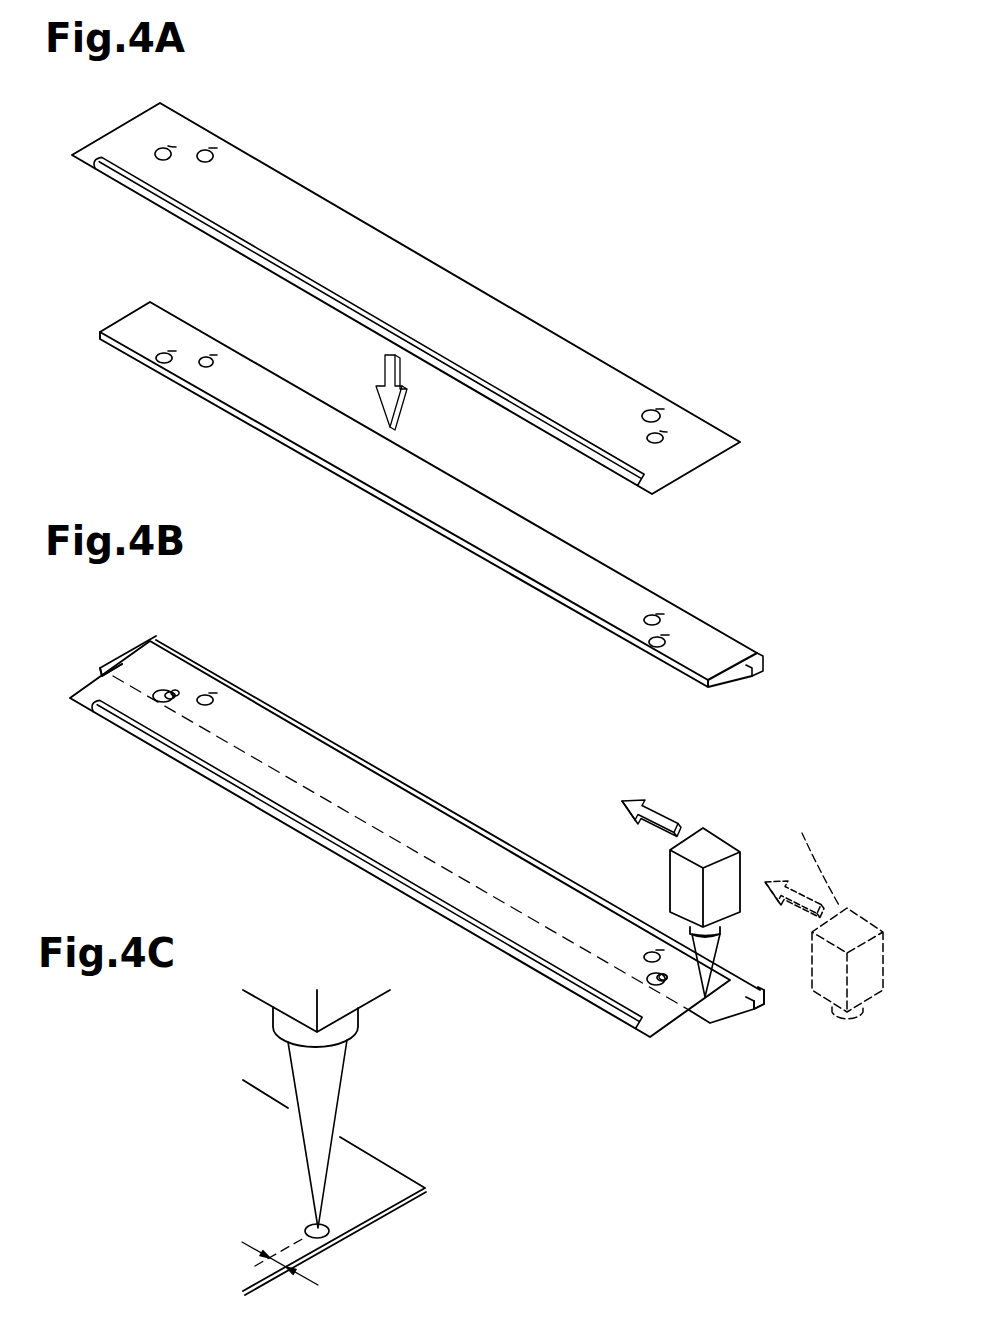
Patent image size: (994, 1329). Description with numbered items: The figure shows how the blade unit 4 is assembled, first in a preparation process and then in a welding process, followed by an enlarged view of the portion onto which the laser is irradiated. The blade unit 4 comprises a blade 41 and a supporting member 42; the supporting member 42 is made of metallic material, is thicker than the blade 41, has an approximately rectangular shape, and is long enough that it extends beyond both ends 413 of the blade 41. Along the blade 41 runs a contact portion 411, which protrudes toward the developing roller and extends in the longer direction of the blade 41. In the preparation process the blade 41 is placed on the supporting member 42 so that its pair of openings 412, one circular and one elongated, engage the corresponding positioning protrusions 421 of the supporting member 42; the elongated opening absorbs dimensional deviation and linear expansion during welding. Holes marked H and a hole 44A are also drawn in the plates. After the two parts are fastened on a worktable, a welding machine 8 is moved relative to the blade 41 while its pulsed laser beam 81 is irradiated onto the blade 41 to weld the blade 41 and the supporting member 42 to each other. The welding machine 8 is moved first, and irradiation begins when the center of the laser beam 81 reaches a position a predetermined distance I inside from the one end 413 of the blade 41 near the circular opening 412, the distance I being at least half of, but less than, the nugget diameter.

In FIG. 4B, the blade unit 4 is at (421, 835).
In FIG. 4A, the blade 41 is at (388, 240).
In FIG. 4B, the blade 41 is at (322, 752).
In FIG. 4C, the blade 41 is at (375, 1170).
In FIG. 4A, the contact portion 411 is at (358, 319).
In FIG. 4B, the contact portion 411 is at (395, 872).
In FIG. 4A, the openings 412 is at (175, 146).
In FIG. 4B, the openings 412 is at (180, 688).
In FIG. 4A, the ends of the blade 413 is at (754, 664).
In FIG. 4B, the ends of the blade 413 is at (93, 683).
In FIG. 4C, the ends of the blade 413 is at (383, 1218).
In FIG. 4A, the supporting member 42 is at (395, 489).
In FIG. 4B, the supporting member 42 is at (127, 657).
In FIG. 4A, the positioning protrusion 421 is at (173, 350).
In FIG. 4B, the positioning protrusion 421 is at (173, 687).
In FIG. 4C, the hole 44A is at (303, 1228).
In FIG. 4B, the welding machine 8 is at (733, 843).
In FIG. 4C, the welding machine 8 is at (363, 1003).
In FIG. 4B, the laser beam 81 is at (707, 951).
In FIG. 4C, the laser beam 81 is at (333, 1098).
In FIG. 4A, the hole H is at (215, 147).
In FIG. 4B, the hole H is at (220, 690).
In FIG. 4C, the predetermined distance I is at (277, 1261).